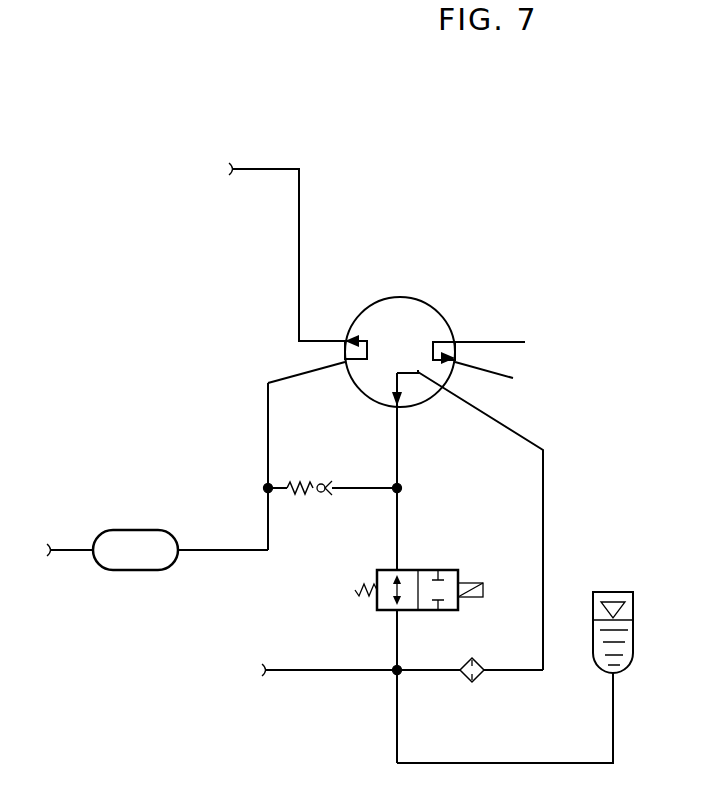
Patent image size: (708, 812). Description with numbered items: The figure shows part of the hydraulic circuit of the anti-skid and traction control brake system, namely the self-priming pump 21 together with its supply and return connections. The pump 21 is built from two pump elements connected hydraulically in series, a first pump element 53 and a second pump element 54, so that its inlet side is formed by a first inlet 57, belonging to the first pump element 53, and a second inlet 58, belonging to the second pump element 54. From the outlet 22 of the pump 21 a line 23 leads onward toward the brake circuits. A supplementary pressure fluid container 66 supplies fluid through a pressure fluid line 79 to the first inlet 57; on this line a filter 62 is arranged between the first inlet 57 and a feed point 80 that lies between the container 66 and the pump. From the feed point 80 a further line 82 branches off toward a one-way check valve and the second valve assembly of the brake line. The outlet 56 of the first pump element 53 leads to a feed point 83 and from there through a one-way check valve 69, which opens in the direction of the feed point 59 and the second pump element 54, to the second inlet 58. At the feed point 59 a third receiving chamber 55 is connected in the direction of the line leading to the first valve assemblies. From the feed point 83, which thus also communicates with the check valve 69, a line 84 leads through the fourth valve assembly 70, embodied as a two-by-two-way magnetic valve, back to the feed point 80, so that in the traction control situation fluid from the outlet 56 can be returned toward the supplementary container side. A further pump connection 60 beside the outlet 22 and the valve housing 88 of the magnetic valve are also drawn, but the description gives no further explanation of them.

The self-priming pump 21 is at (452, 298).
The outlet of the self-priming pump 22 is at (345, 341).
The line 23 is at (252, 168).
The first pump element 53 is at (423, 393).
The second pump element 54 is at (352, 352).
The third receiving chamber 55 is at (157, 550).
The outlet of the first pump element 56 is at (398, 408).
The first inlet 57 is at (452, 382).
The second inlet 58 is at (345, 363).
The feed point 59 is at (268, 488).
The outlet port 60 is at (445, 348).
The filter 62 is at (478, 682).
The supplementary pressure fluid container 66 is at (596, 632).
The one-way check valve 69 is at (325, 495).
The fourth valve assembly 70 is at (480, 598).
The pressure fluid line 79 is at (540, 763).
The feed point 80 is at (400, 675).
The further line 82 is at (315, 673).
The feed point 83 is at (401, 490).
The line 84 is at (398, 640).
The solenoid valve 88 is at (450, 585).